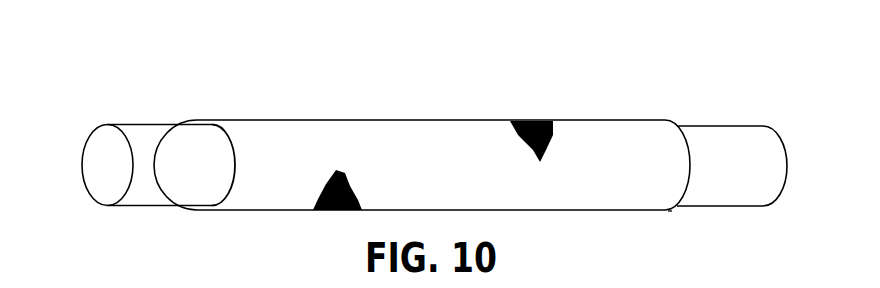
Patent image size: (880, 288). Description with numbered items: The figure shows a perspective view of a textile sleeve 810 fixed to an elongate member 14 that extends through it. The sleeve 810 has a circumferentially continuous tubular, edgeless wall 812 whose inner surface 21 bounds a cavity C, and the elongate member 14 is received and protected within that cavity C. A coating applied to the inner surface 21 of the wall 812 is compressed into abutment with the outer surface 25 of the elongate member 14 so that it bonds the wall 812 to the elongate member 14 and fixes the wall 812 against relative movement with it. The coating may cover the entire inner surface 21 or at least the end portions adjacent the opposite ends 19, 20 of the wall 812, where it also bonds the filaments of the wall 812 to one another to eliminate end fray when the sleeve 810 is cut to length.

The textile sleeve 810 is at (630, 94).
The wall 812 is at (325, 119).
The end 19 is at (198, 209).
The inner surface 21 is at (234, 165).
The elongate member 14 is at (722, 142).
The end 20 is at (670, 211).
The outer surface 25 is at (742, 182).
The cavity C is at (213, 158).